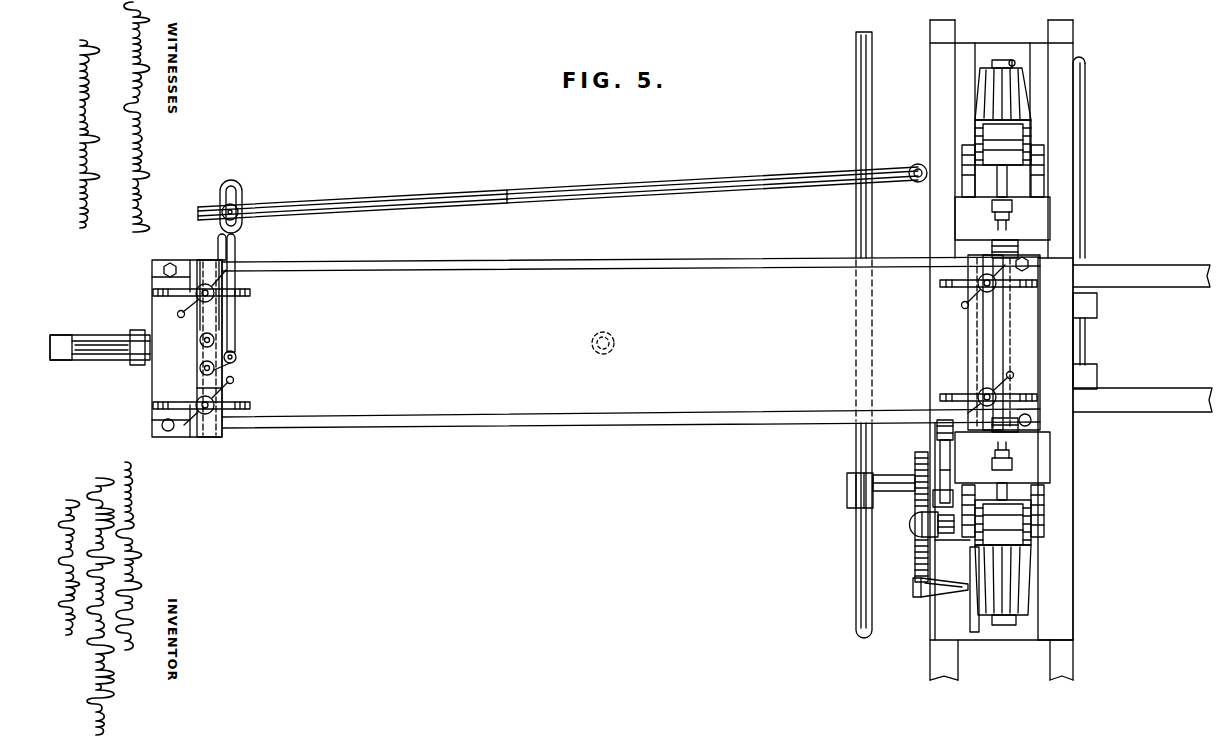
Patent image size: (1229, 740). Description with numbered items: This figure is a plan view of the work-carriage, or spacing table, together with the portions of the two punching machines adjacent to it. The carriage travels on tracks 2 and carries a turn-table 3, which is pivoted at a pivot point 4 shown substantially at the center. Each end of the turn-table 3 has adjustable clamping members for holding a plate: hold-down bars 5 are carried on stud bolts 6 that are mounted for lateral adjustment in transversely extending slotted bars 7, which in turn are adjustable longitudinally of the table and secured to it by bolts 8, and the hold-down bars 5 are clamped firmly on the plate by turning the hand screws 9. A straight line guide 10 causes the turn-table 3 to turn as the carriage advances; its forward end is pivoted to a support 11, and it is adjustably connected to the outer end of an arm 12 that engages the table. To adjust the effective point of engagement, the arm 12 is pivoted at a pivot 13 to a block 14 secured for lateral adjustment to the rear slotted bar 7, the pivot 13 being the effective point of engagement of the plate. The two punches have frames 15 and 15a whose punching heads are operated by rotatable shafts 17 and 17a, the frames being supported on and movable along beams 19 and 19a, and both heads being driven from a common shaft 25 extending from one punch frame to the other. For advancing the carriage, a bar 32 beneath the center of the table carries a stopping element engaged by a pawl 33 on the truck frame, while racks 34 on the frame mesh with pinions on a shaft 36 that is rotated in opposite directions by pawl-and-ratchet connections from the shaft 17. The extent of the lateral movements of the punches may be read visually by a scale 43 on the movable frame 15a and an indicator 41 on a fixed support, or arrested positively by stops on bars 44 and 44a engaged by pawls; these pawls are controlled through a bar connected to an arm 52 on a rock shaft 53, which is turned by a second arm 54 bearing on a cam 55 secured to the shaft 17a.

The tracks 2 is at (1142, 326).
The turn-table 3 is at (480, 404).
The pivot point 4 is at (590, 343).
The hold-down bars 5 is at (153, 291).
The stud bolts 6 is at (200, 284).
The slotted bars 7 is at (197, 390).
The bolts 8 is at (166, 260).
The hand screws 9 is at (176, 314).
The straight line guide 10 is at (543, 192).
The support 11 is at (912, 164).
The arm 12 is at (236, 312).
The pivot 13 is at (237, 355).
The block 14 is at (222, 368).
The punch frame 15 is at (1040, 222).
The punch frame 15a is at (1040, 460).
The rotatable shaft 17 is at (1003, 60).
The rotatable shaft 17a is at (1010, 620).
The beam 19 is at (930, 660).
The beam 19a is at (1075, 657).
The shaft 25 is at (858, 590).
The bar 32 is at (62, 335).
The pawl 33 is at (85, 352).
The racks 34 is at (1097, 305).
The shaft 36 is at (1086, 140).
The indicator 41 is at (954, 592).
The scale 43 is at (970, 572).
The bar 44 is at (915, 460).
The bar 44a is at (915, 566).
The arm 52 is at (915, 536).
The rock shaft 53 is at (912, 508).
The second arm 54 is at (968, 440).
The cam 55 is at (1075, 427).